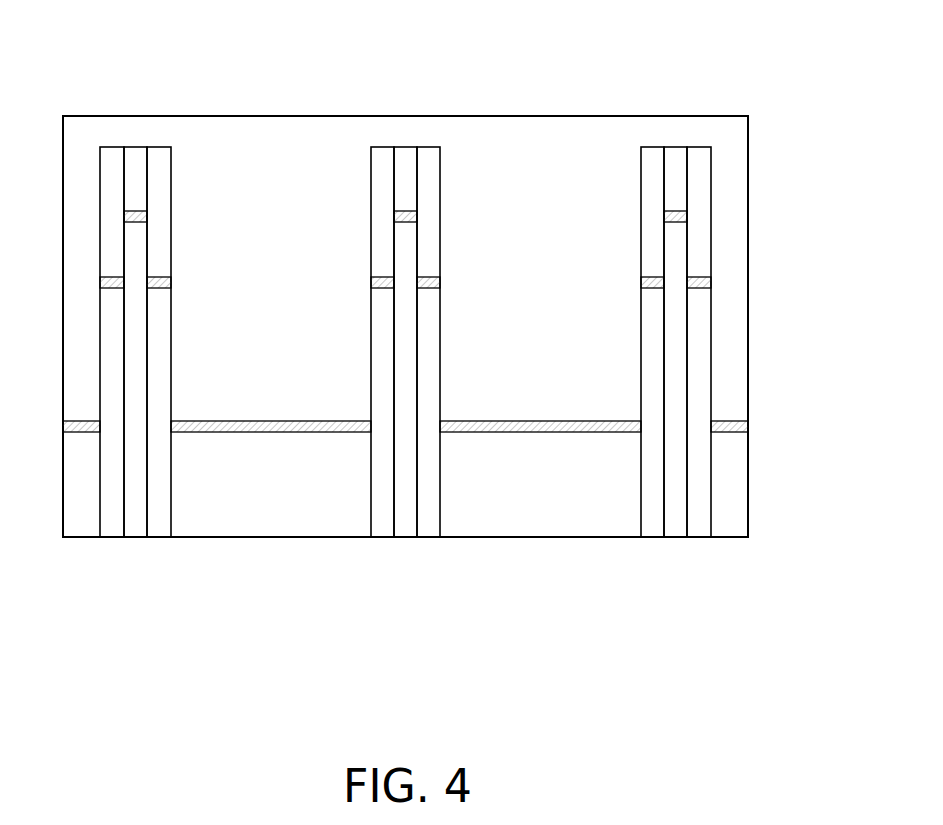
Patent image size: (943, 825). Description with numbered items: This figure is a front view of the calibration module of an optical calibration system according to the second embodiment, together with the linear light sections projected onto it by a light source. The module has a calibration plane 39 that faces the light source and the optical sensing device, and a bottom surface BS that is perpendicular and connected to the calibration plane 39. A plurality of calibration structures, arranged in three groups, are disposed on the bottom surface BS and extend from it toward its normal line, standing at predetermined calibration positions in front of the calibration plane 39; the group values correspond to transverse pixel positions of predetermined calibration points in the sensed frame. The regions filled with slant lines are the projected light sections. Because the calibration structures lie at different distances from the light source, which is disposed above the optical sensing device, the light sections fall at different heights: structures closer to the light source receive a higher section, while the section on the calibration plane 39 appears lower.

The calibration plane 39 is at (748, 323).
The bottom surface BS is at (601, 538).